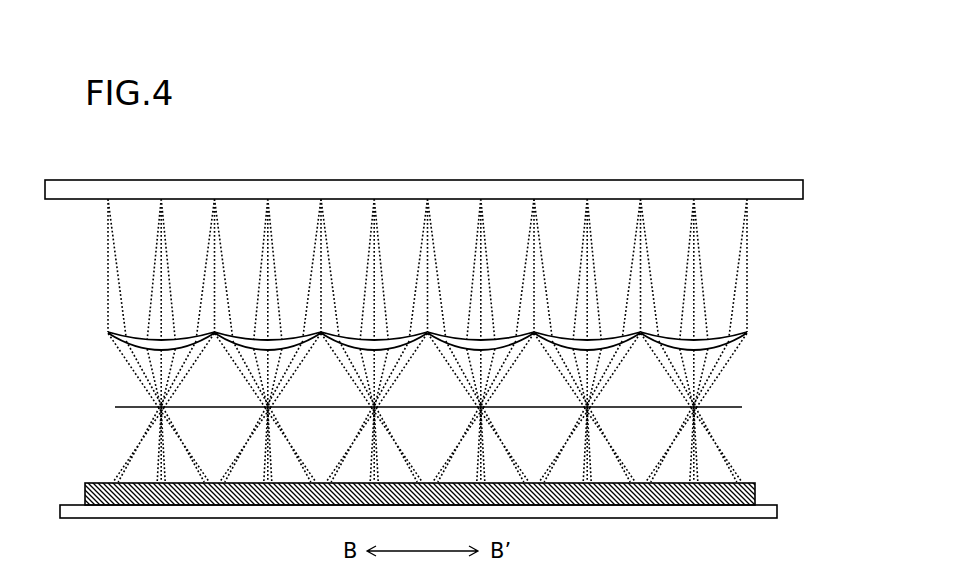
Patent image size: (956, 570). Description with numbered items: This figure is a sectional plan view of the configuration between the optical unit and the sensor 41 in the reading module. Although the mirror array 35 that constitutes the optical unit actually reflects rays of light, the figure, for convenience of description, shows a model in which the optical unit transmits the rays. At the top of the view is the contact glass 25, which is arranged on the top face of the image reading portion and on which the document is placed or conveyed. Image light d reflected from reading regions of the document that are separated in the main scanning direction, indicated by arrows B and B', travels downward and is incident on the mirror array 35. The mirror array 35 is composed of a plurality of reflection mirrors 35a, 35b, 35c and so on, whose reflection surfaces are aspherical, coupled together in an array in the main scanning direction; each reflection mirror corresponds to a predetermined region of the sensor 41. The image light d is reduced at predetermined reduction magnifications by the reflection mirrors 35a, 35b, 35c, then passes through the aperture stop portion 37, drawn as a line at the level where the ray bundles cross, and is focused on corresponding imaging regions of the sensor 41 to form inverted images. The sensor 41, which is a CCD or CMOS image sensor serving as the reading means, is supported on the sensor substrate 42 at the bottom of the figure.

The contact glass 25 is at (748, 180).
The image light d is at (747, 281).
The mirror array 35 is at (466, 362).
The reflection mirror 35a is at (735, 349).
The reflection mirror 35b is at (614, 349).
The reflection mirror 35c is at (503, 349).
The aperture stop portion 37 is at (129, 407).
The sensor 41 is at (85, 483).
The sensor substrate 42 is at (762, 505).